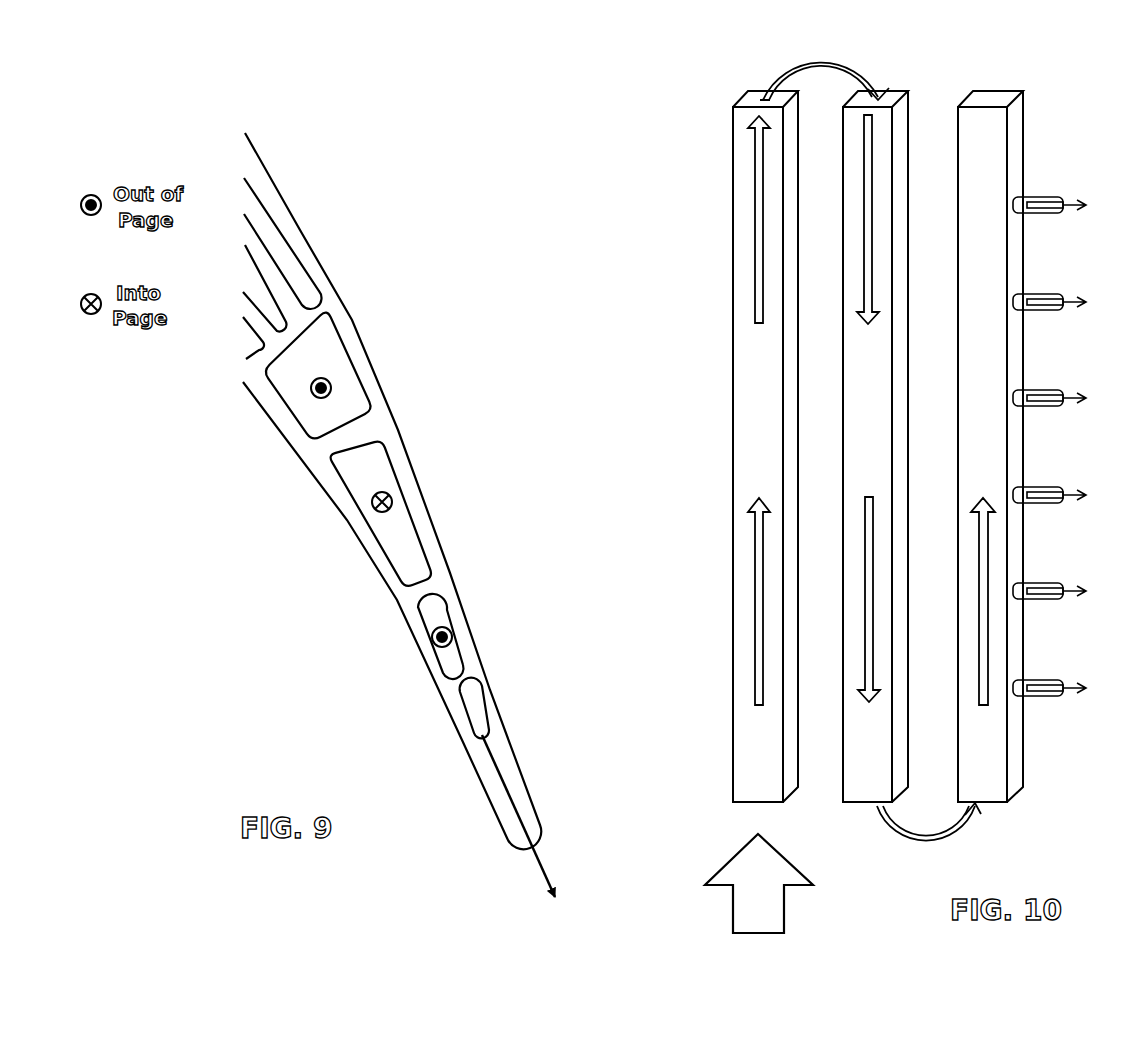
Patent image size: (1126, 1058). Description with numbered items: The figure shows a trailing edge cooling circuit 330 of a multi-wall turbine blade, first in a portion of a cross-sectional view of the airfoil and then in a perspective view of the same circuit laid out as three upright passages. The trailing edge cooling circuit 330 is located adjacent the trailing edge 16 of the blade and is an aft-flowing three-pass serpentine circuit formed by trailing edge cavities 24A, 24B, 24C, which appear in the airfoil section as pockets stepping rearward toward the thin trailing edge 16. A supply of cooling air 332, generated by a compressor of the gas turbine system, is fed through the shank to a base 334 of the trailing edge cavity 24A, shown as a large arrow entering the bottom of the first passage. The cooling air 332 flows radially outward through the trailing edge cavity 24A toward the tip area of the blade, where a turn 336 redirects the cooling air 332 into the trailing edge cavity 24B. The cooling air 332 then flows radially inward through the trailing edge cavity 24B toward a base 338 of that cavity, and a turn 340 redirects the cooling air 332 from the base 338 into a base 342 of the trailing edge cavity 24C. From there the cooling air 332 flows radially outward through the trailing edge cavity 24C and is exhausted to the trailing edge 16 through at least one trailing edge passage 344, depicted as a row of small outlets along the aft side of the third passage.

In FIG. 9, the trailing edge 16 is at (562, 788).
In FIG. 9, the trailing edge cavity 24A is at (352, 353).
In FIG. 10, the trailing edge cavity 24A is at (780, 398).
In FIG. 9, the trailing edge cavity 24B is at (403, 488).
In FIG. 10, the trailing edge cavity 24B is at (885, 398).
In FIG. 9, the trailing edge cavity 24C is at (446, 612).
In FIG. 10, the trailing edge cavity 24C is at (1005, 398).
In FIG. 9, the trailing edge cooling circuit 330 is at (373, 563).
In FIG. 10, the trailing edge cooling circuit 330 is at (663, 75).
In FIG. 9, the cooling air 332 is at (316, 397).
In FIG. 10, the cooling air 332 is at (779, 886).
In FIG. 10, the base 334 is at (740, 808).
In FIG. 10, the turn 336 is at (838, 62).
In FIG. 10, the base 338 is at (860, 808).
In FIG. 10, the turn 340 is at (907, 843).
In FIG. 10, the base 342 is at (997, 810).
In FIG. 10, the trailing edge passage 344 is at (1058, 503).